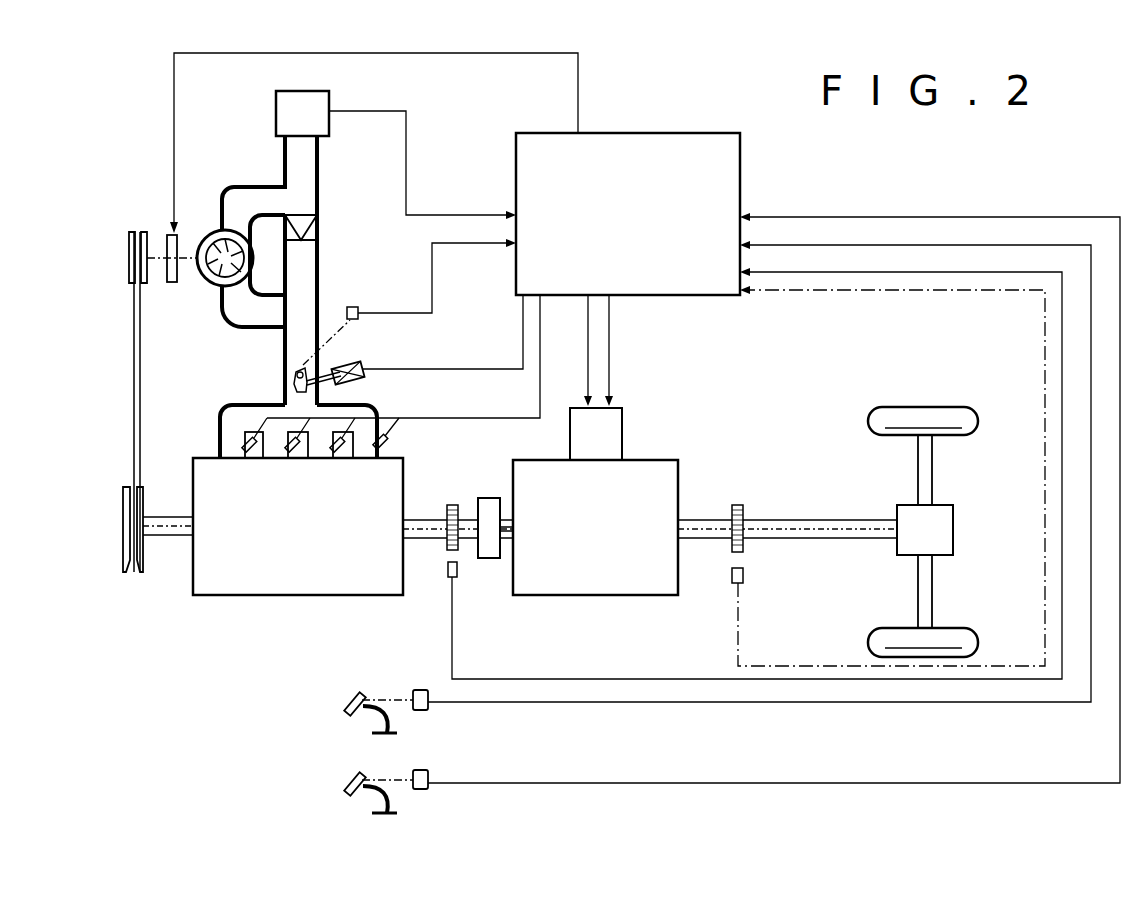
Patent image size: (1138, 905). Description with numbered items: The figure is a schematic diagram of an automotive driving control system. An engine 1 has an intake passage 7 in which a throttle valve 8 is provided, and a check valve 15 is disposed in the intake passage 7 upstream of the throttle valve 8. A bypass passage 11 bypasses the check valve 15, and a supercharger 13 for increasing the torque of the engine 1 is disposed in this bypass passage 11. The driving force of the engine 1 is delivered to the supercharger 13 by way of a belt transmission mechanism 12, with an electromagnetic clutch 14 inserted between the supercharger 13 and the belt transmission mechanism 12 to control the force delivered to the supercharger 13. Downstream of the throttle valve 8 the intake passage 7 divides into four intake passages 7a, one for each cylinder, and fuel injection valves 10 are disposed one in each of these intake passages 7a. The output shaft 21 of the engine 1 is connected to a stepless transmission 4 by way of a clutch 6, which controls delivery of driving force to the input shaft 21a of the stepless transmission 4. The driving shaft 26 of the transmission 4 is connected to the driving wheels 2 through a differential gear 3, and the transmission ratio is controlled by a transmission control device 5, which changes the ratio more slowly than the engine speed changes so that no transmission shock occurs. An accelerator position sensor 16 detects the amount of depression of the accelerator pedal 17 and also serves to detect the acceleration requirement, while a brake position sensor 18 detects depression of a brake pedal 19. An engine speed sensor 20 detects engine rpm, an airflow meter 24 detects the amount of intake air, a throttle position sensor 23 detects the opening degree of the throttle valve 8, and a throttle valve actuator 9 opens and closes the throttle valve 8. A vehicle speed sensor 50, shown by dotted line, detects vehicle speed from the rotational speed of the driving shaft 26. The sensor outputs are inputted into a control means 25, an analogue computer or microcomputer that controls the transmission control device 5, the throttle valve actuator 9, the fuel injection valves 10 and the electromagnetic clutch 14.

The engine 1 is at (300, 595).
The driving wheels 2 is at (968, 407).
The differential gear 3 is at (900, 505).
The stepless transmission 4 is at (680, 478).
The transmission control device 5 is at (624, 426).
The clutch 6 is at (491, 497).
The intake passage 7 is at (285, 343).
The intake passages 7a is at (228, 454).
The throttle valve 8 is at (292, 379).
The throttle valve actuator 9 is at (356, 363).
The fuel injection valves 10 is at (252, 452).
The bypass passage 11 is at (257, 197).
The belt transmission mechanism 12 is at (133, 408).
The supercharger 13 is at (252, 260).
The electromagnetic clutch 14 is at (167, 238).
The check valve 15 is at (318, 234).
The accelerator position sensor 16 is at (423, 690).
The accelerator pedal 17 is at (372, 690).
The brake position sensor 18 is at (423, 770).
The brake pedal 19 is at (352, 778).
The engine speed sensor 20 is at (448, 575).
The output shaft 21 is at (464, 508).
The input shaft 21a is at (506, 550).
The throttle position sensor 23 is at (353, 307).
The airflow meter 24 is at (330, 98).
The control means 25 is at (742, 173).
The driving shaft 26 is at (792, 522).
The vehicle speed sensor 50 is at (745, 572).